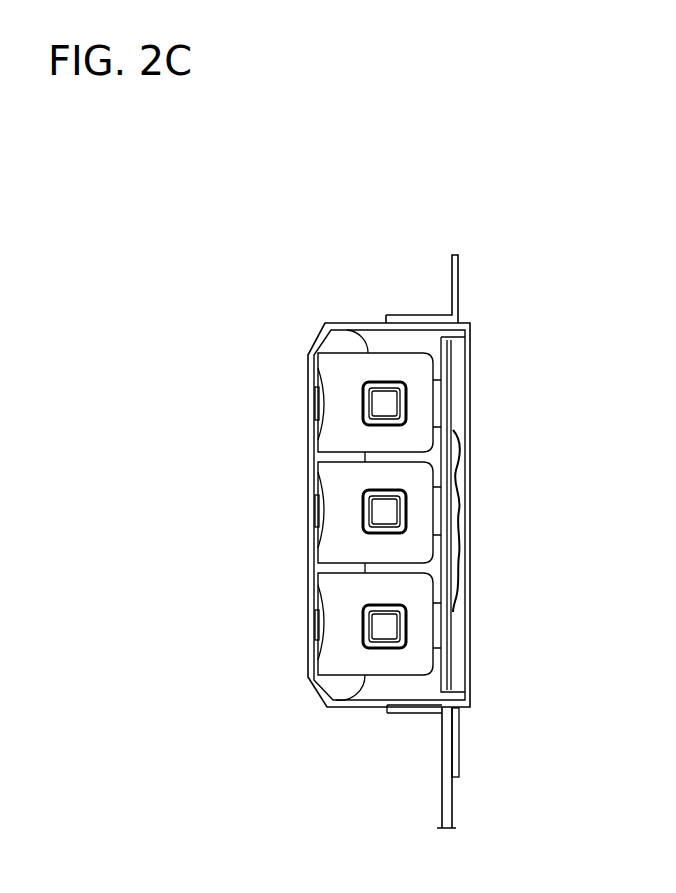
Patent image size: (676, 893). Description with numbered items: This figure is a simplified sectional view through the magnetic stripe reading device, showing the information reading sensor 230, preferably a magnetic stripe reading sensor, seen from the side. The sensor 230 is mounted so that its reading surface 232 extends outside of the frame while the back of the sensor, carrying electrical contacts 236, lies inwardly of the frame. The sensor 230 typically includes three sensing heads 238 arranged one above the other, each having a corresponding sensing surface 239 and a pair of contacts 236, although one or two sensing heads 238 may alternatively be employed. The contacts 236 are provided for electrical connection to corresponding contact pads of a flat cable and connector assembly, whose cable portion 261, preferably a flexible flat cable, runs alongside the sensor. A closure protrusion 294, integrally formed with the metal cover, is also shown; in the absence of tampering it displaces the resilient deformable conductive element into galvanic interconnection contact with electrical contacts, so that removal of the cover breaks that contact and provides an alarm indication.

The information reading sensor 230 is at (323, 563).
The reading surface 232 is at (313, 458).
The electrical contacts 236 is at (438, 397).
The sensing heads 238 is at (342, 375).
The sensing surface 239 is at (317, 402).
The closure protrusion 294 is at (472, 537).
The cable portion 261 is at (450, 808).